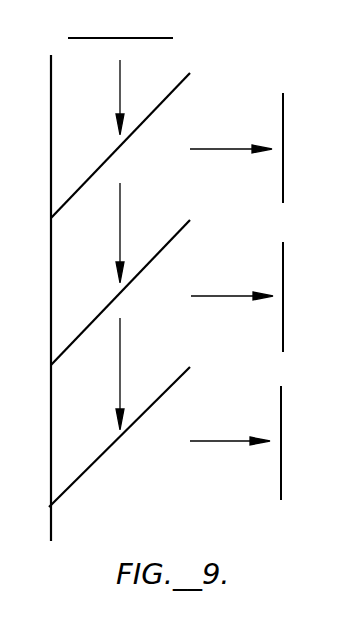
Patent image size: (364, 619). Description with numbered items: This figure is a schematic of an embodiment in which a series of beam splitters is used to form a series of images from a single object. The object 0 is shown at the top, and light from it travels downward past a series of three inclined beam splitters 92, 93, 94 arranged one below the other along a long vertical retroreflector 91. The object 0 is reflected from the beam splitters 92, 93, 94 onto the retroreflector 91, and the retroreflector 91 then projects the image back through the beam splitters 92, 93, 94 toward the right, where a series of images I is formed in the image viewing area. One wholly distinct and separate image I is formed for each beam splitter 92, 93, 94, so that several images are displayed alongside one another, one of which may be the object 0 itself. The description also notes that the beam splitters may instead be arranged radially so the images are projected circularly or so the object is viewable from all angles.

The retroreflector 91 is at (51, 123).
The beam splitter 92 is at (182, 94).
The beam splitter 93 is at (182, 242).
The beam splitter 94 is at (182, 389).
The object 0 is at (164, 38).
The image I is at (285, 180).